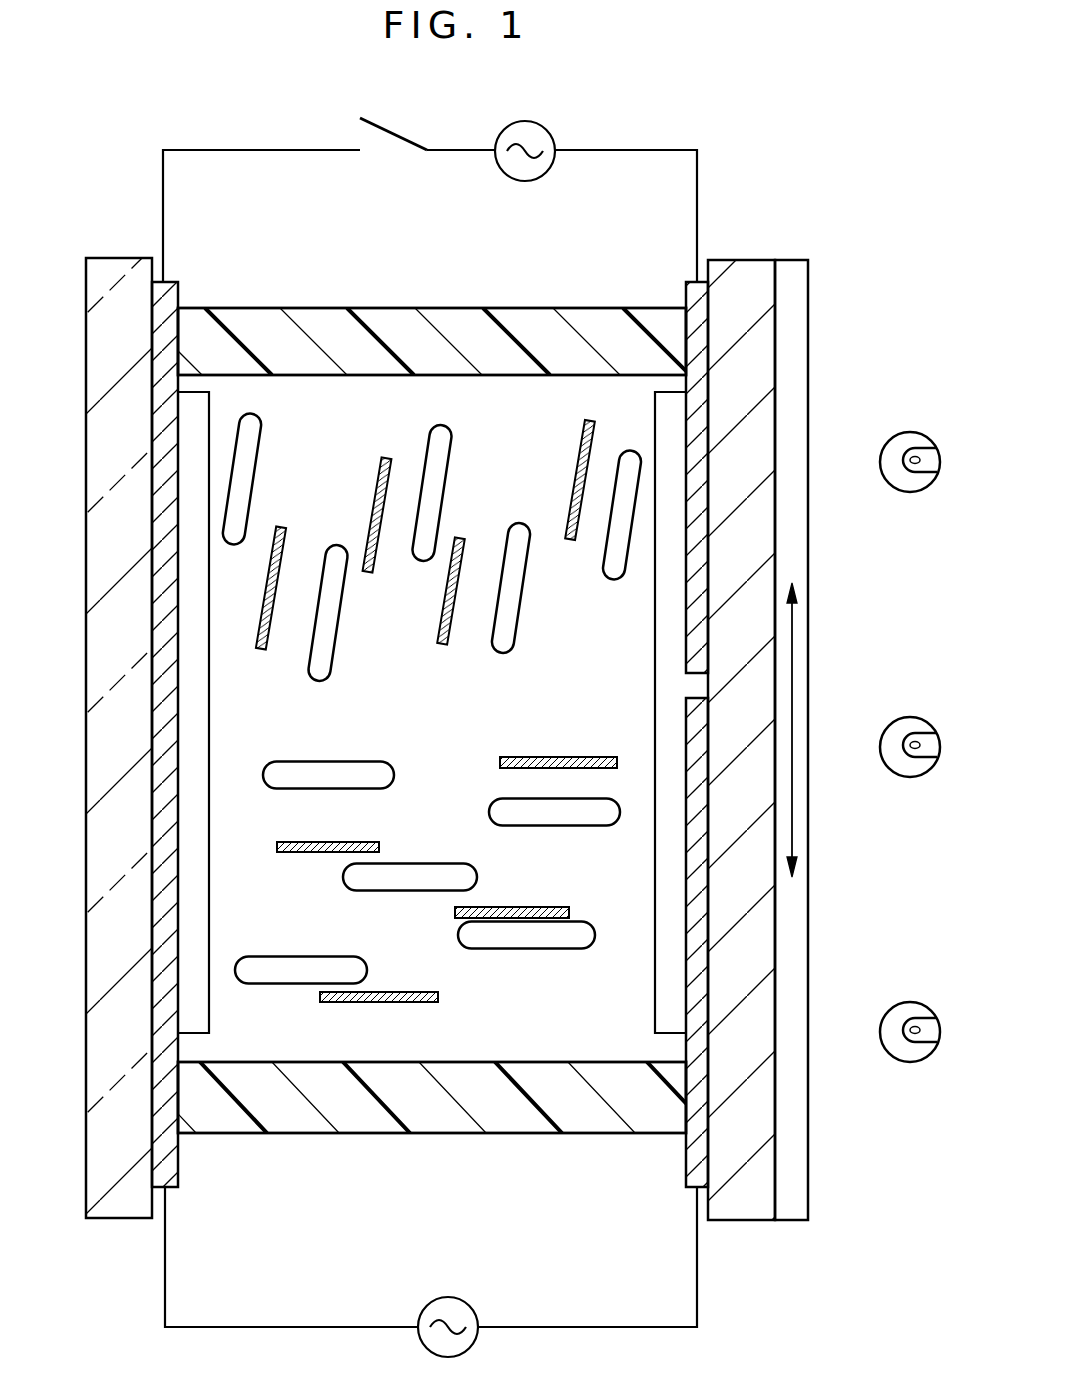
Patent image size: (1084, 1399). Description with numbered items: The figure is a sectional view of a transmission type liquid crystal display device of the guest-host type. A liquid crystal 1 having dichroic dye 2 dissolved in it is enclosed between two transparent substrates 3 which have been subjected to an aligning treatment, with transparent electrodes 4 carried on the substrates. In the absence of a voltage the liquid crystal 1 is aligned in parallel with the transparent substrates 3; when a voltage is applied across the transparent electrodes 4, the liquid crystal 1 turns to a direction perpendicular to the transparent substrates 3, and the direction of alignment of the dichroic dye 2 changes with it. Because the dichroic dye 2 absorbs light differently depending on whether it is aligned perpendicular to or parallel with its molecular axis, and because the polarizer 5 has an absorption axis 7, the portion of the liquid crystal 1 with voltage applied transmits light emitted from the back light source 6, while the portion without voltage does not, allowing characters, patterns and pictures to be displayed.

The liquid crystal 1 is at (258, 424).
The dichroic dye 2 is at (386, 458).
The transparent substrate 3 is at (125, 1220).
The transparent electrode 4 is at (180, 1171).
The polarizer 5 is at (792, 270).
The back light source 6 is at (907, 440).
The absorption axis 7 is at (794, 680).